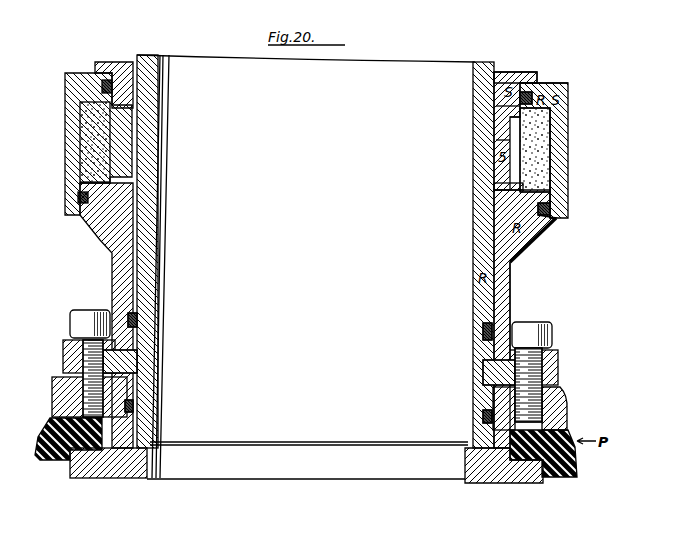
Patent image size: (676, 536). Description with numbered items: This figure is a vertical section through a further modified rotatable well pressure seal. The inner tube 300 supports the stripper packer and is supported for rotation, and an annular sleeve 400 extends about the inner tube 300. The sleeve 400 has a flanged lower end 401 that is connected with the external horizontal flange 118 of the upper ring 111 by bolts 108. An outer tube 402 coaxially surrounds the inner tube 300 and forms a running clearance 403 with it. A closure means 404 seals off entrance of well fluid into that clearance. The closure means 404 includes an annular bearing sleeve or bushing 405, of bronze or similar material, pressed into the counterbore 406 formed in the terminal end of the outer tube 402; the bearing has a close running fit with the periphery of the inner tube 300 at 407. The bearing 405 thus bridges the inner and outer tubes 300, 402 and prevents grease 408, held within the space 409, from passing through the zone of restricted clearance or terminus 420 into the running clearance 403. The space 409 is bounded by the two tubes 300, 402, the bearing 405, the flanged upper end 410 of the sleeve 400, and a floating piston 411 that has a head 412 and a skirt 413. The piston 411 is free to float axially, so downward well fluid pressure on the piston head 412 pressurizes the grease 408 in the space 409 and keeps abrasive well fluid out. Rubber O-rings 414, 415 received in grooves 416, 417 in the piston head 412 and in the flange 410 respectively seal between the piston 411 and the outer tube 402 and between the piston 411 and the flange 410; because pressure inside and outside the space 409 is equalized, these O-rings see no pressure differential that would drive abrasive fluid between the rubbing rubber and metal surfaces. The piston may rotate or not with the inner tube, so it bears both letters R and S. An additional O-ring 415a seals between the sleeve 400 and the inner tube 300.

The inner tube 300 is at (482, 172).
The outer tube 402 is at (512, 72).
The running clearance 403 is at (500, 92).
The groove 416 is at (500, 106).
The close running fit 407 is at (505, 120).
The annular bearing sleeve or bushing 405 is at (503, 140).
The zone of restricted clearance or terminus 420 is at (500, 190).
The floating piston 411 is at (582, 105).
The skirt 413 is at (560, 157).
The rubber O-ring 414 is at (536, 93).
The head 412 is at (536, 98).
The space 409 is at (552, 122).
The counterbore 406 is at (513, 132).
The grease 408 is at (515, 170).
The flanged upper end 410 is at (505, 222).
The annular sleeve 400 is at (512, 251).
The groove 417 is at (551, 209).
The closure means 404 is at (580, 190).
The rubber O-ring 415 is at (556, 221).
The additional O-ring 415a is at (488, 328).
The flanged lower end 401 is at (560, 361).
The bolts 108 is at (531, 375).
The external horizontal flange 118 is at (557, 422).
The upper ring 111 is at (463, 469).